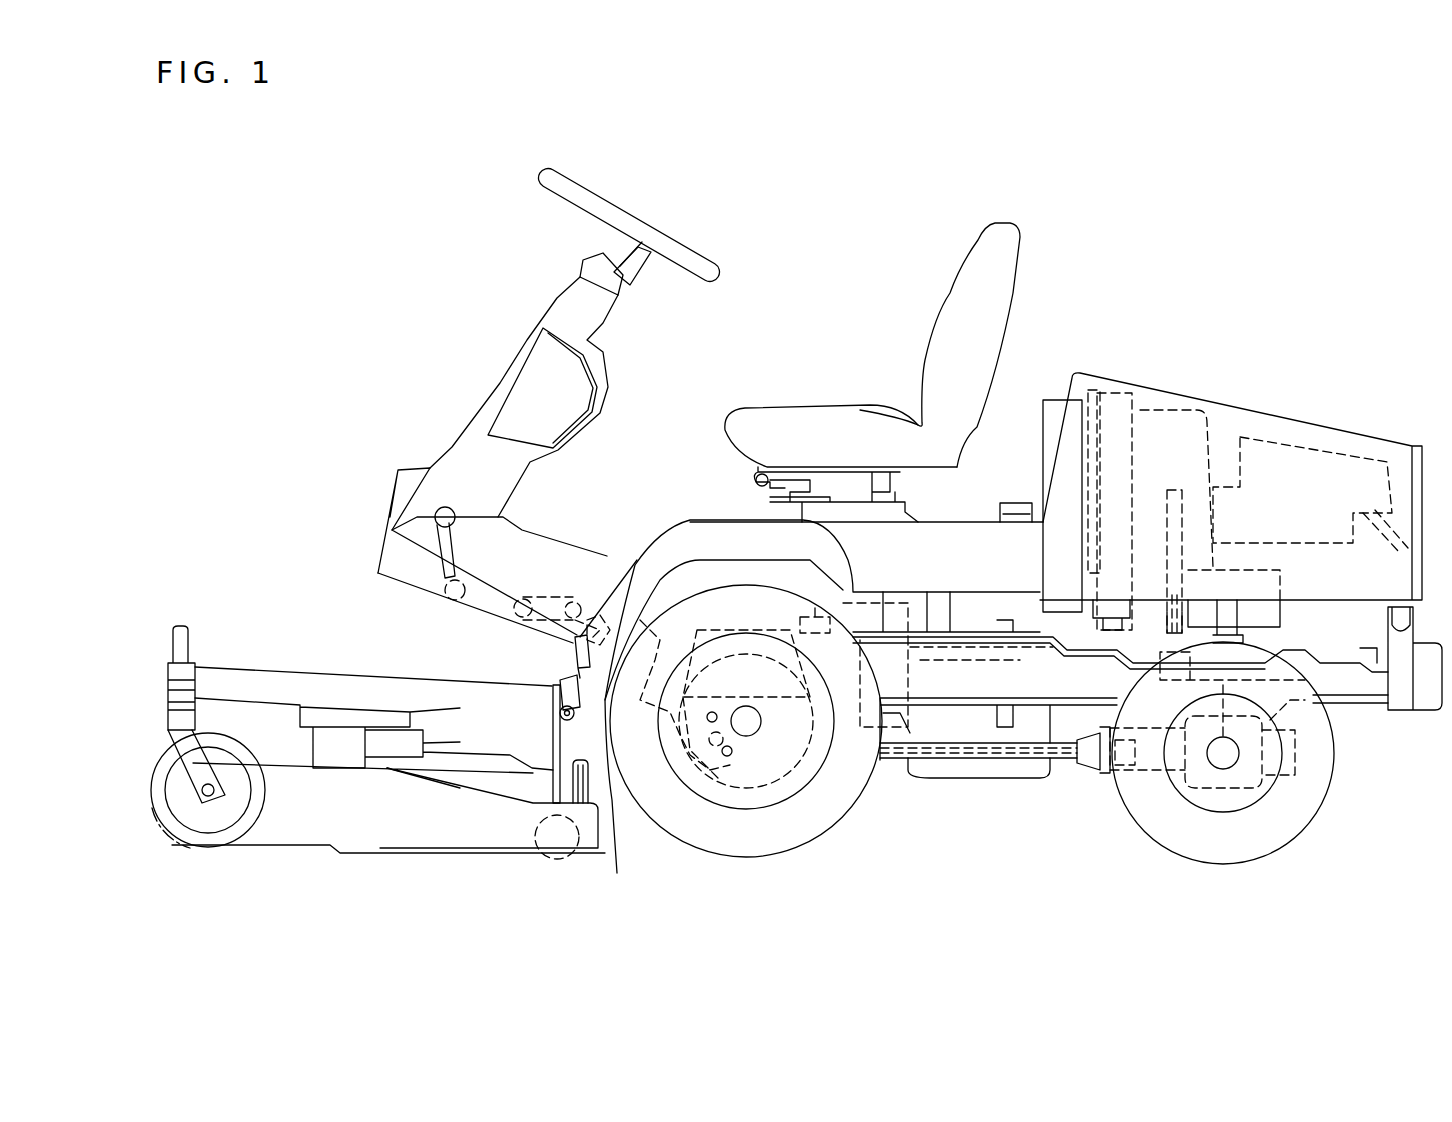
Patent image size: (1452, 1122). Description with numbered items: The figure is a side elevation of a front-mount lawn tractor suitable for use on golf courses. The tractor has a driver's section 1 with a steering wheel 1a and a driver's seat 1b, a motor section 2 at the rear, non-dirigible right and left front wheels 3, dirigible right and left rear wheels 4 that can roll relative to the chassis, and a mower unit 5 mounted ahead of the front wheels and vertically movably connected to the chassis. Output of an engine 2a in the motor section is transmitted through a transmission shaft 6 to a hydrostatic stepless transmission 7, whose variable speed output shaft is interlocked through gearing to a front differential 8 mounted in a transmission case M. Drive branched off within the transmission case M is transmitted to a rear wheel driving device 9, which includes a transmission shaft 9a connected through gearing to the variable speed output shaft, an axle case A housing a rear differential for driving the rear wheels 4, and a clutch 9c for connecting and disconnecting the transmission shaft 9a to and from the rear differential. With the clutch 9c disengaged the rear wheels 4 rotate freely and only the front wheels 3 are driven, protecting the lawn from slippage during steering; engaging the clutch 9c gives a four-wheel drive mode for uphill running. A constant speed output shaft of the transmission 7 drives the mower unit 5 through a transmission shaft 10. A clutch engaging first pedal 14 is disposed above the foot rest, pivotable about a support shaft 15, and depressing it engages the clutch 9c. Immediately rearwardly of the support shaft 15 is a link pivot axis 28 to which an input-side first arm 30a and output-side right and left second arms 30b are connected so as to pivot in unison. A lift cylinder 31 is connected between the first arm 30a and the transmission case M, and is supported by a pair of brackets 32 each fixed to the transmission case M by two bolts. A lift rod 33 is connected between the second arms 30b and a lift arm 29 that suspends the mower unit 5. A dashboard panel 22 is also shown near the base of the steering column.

The driver's section 1 is at (806, 160).
The steering wheel 1a is at (643, 222).
The driver's seat 1b is at (840, 407).
The motor section 2 is at (1303, 447).
The engine 2a is at (1227, 487).
The front wheels 3 is at (774, 857).
The rear wheels 4 is at (1166, 852).
The mower unit 5 is at (351, 670).
The transmission shaft 6 is at (968, 650).
The hydrostatic stepless transmission 7 is at (893, 717).
The front differential 8 is at (722, 773).
The rear wheel driving device 9 is at (1020, 757).
The transmission shaft 9a is at (943, 650).
The clutch 9c is at (1125, 770).
The transmission shaft 10 is at (807, 613).
The first pedal 14 is at (445, 505).
The support shaft 15 is at (455, 590).
The dashboard panel 22 is at (392, 528).
The link pivot axis 28 is at (522, 607).
The lift arm 29 is at (467, 727).
The first arm 30a is at (550, 597).
The second arms 30b is at (605, 600).
The lift cylinder 31 is at (620, 640).
The brackets 32 is at (707, 733).
The lift rod 33 is at (612, 800).
The transmission case M is at (820, 830).
The axle case A is at (1180, 787).